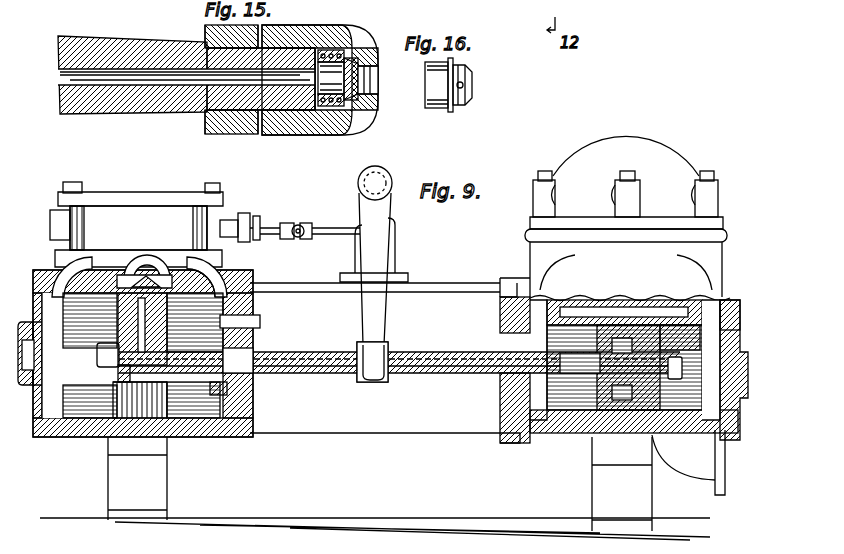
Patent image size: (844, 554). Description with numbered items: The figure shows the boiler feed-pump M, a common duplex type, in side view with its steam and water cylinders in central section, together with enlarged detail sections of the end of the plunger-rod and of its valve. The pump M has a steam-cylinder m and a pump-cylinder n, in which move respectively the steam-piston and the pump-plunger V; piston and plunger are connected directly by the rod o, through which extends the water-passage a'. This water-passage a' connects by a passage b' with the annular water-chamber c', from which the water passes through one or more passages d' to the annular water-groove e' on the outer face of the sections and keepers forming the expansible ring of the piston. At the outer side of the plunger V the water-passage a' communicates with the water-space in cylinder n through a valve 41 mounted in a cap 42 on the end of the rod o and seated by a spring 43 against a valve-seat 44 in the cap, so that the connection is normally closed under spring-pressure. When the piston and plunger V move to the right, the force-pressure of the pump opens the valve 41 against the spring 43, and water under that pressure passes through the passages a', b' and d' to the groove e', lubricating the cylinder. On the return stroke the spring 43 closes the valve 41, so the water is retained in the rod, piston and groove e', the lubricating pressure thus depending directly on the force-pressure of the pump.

In FIG. 15, the rod o is at (105, 52).
In FIG. 9, the rod o is at (421, 355).
In FIG. 15, the cap 42 is at (332, 42).
In FIG. 9, the cap 42 is at (721, 300).
In FIG. 15, the spring 43 is at (325, 108).
In FIG. 15, the valve 41 is at (352, 100).
In FIG. 16, the valve 41 is at (425, 86).
In FIG. 15, the valve-seat 44 is at (374, 112).
In FIG. 9, the valve-seat 44 is at (680, 380).
In FIG. 9, the annular water-groove e is at (118, 278).
In FIG. 9, the passage d is at (194, 278).
In FIG. 9, the annular water-chamber c is at (100, 322).
In FIG. 9, the passage b is at (170, 344).
In FIG. 9, the water-passage a is at (200, 392).
In FIG. 9, the pump-plunger V is at (110, 386).
In FIG. 9, the feed-pump M is at (340, 410).
In FIG. 9, the steam-cylinder m is at (88, 432).
In FIG. 9, the pump-cylinder n is at (572, 430).